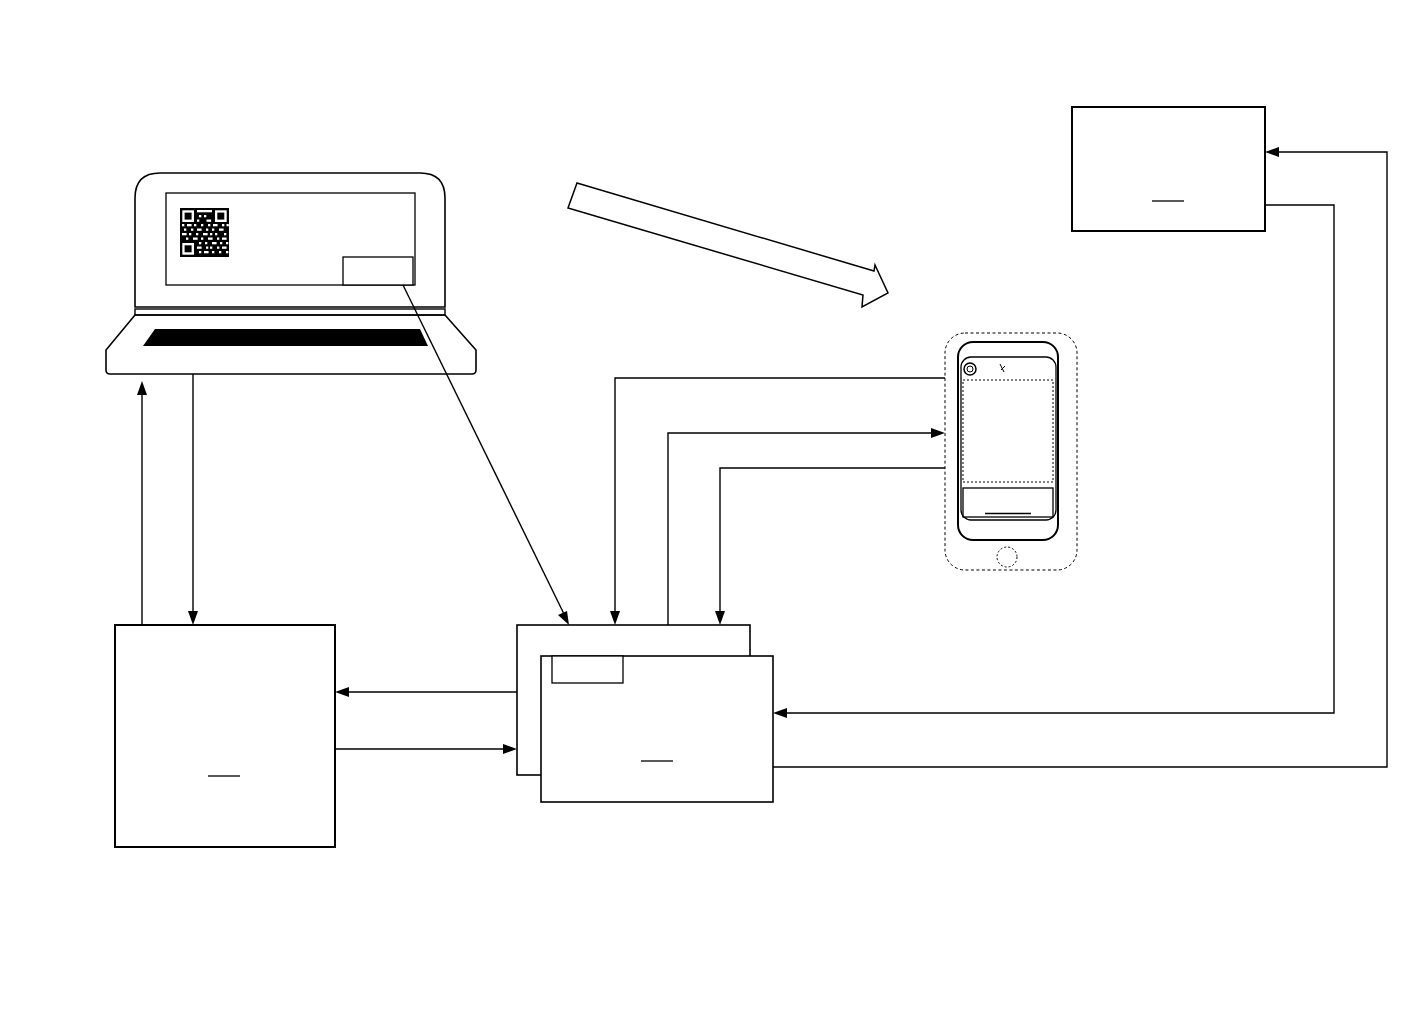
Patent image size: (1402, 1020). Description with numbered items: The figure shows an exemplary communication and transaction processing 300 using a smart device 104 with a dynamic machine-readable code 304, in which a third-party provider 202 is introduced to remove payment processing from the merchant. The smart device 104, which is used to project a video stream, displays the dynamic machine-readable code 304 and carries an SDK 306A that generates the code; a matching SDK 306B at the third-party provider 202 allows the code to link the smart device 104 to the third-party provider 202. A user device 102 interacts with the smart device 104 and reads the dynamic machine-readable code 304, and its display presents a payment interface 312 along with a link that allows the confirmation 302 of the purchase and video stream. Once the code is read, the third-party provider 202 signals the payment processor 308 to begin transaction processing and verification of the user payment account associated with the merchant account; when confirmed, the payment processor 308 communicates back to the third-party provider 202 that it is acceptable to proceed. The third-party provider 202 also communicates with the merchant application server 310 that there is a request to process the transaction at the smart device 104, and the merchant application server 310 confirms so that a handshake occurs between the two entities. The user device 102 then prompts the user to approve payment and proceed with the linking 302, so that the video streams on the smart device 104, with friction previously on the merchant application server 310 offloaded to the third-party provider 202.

The communication and transaction processing 300 is at (1250, 63).
The smart device 104 is at (388, 172).
The dynamic machine-readable code 304 is at (180, 218).
The SDK 306A is at (413, 264).
The user device 102 is at (1046, 333).
The payment interface 312 is at (1056, 412).
The confirmation 302 is at (963, 510).
The payment processor 308 is at (1168, 169).
The third-party provider 202 is at (608, 713).
The SDK 306B is at (552, 679).
The merchant application server 310 is at (225, 736).